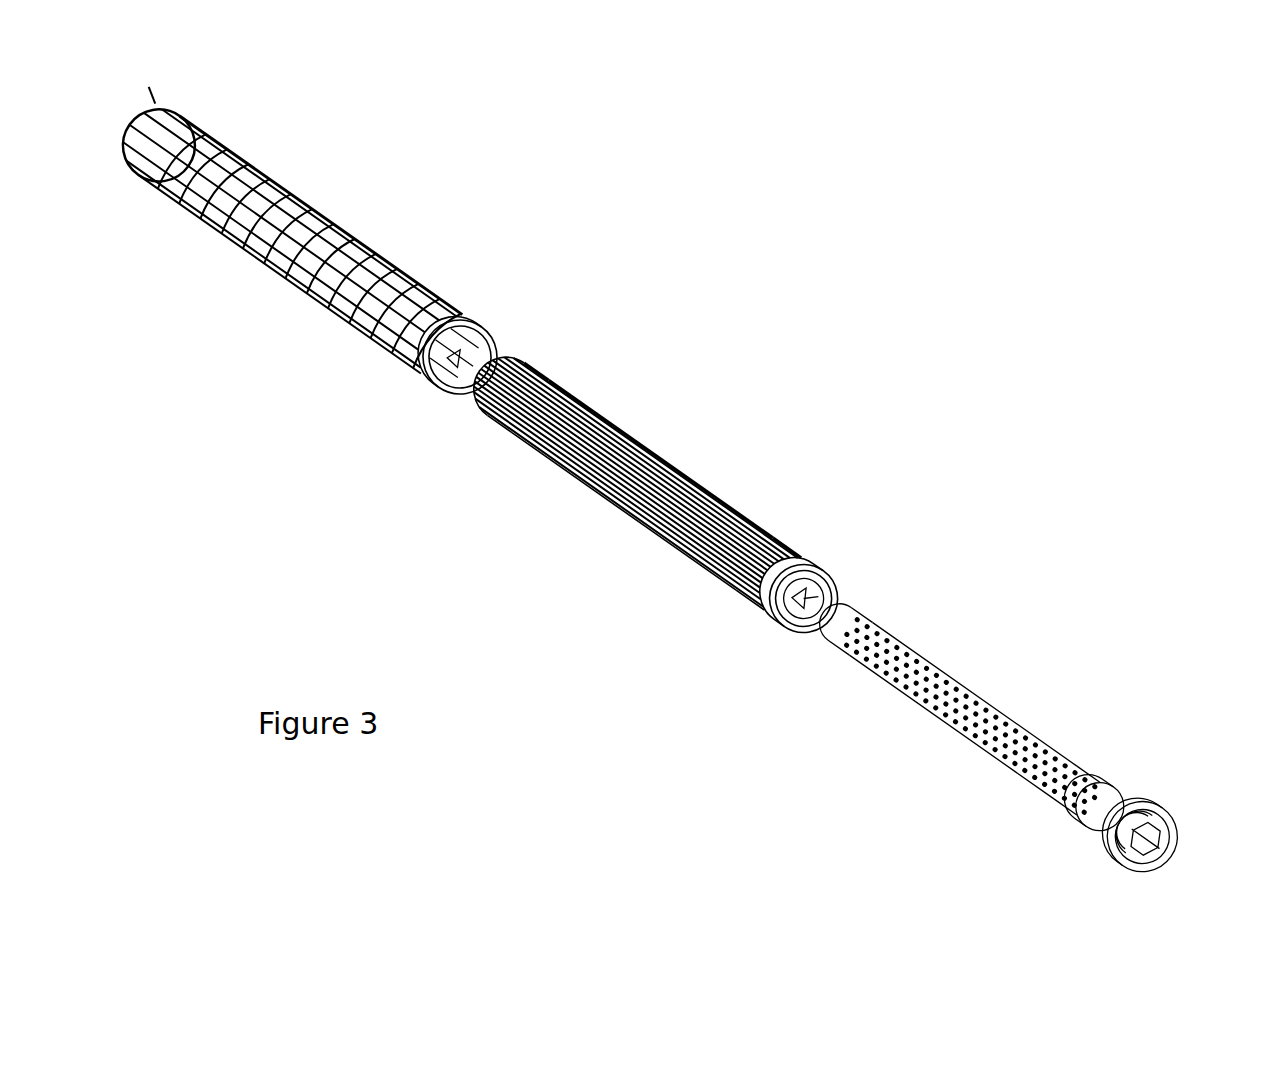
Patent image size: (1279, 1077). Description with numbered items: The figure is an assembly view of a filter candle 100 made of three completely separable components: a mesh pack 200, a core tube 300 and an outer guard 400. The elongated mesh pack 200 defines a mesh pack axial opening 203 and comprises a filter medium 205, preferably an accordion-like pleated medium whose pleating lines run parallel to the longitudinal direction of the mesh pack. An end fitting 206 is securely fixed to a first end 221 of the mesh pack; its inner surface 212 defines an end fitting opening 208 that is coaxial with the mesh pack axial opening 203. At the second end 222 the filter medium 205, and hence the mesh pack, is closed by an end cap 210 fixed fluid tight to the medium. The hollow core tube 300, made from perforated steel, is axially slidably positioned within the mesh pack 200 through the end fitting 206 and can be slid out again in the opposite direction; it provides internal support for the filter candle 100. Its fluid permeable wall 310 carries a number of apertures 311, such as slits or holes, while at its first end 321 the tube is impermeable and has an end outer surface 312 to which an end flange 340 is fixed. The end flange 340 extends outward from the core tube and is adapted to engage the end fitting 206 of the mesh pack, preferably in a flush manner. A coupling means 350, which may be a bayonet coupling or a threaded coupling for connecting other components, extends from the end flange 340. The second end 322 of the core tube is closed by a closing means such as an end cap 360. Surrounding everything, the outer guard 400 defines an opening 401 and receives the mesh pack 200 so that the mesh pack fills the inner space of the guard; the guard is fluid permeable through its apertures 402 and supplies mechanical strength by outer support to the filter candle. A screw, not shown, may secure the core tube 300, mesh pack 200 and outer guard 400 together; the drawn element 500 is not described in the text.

The filter candle 100 is at (836, 293).
The mesh pack 200 is at (628, 509).
The mesh pack axial opening 203 is at (810, 623).
The filter medium 205 is at (567, 388).
The end fitting 206 is at (740, 604).
The end fitting opening 208 is at (792, 623).
The end cap 210 is at (480, 397).
The inner surface 212 is at (825, 577).
The first end 221 is at (769, 621).
The second end 222 is at (528, 351).
The core tube 300 is at (1037, 702).
The fluid permeable wall 310 is at (913, 655).
The apertures 311 is at (1007, 733).
The end outer surface 312 is at (1125, 806).
The first end 321 is at (1089, 846).
The second end 322 is at (844, 596).
The end flange 340 is at (1163, 815).
The coupling means 350 is at (1152, 868).
The end cap 360 is at (838, 602).
The outer guard 400 is at (319, 271).
The opening 401 is at (407, 379).
The apertures 402 is at (200, 210).
The end cap 500 is at (1176, 814).